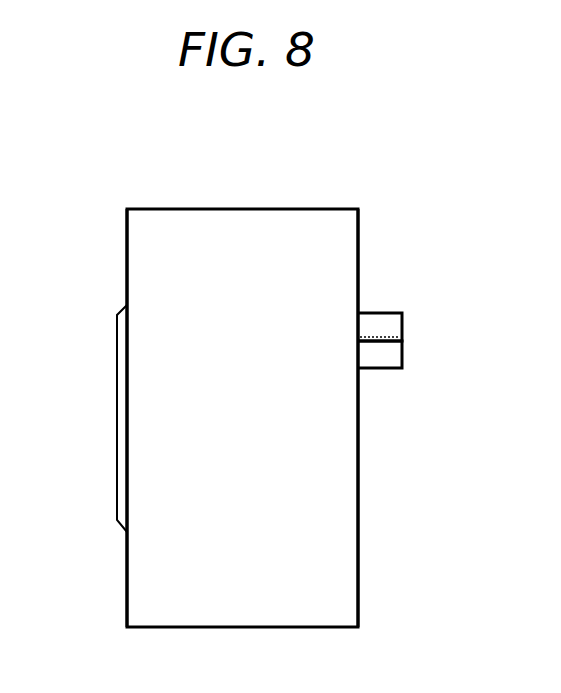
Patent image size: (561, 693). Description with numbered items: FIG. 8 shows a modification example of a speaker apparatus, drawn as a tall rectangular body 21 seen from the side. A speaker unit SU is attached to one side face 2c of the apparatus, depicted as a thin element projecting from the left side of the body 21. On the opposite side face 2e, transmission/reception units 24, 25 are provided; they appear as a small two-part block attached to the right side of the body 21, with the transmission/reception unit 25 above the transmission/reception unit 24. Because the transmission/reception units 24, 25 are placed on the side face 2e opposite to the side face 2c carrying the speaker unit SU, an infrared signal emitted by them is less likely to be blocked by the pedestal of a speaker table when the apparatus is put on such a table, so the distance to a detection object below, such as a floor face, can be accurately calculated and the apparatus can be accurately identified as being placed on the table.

The housing body 21 is at (212, 208).
The side face 2e is at (360, 240).
The side face 2c is at (127, 583).
The speaker unit SU is at (117, 347).
The transmission/reception unit 25 is at (388, 313).
The transmission/reception unit 24 is at (388, 368).